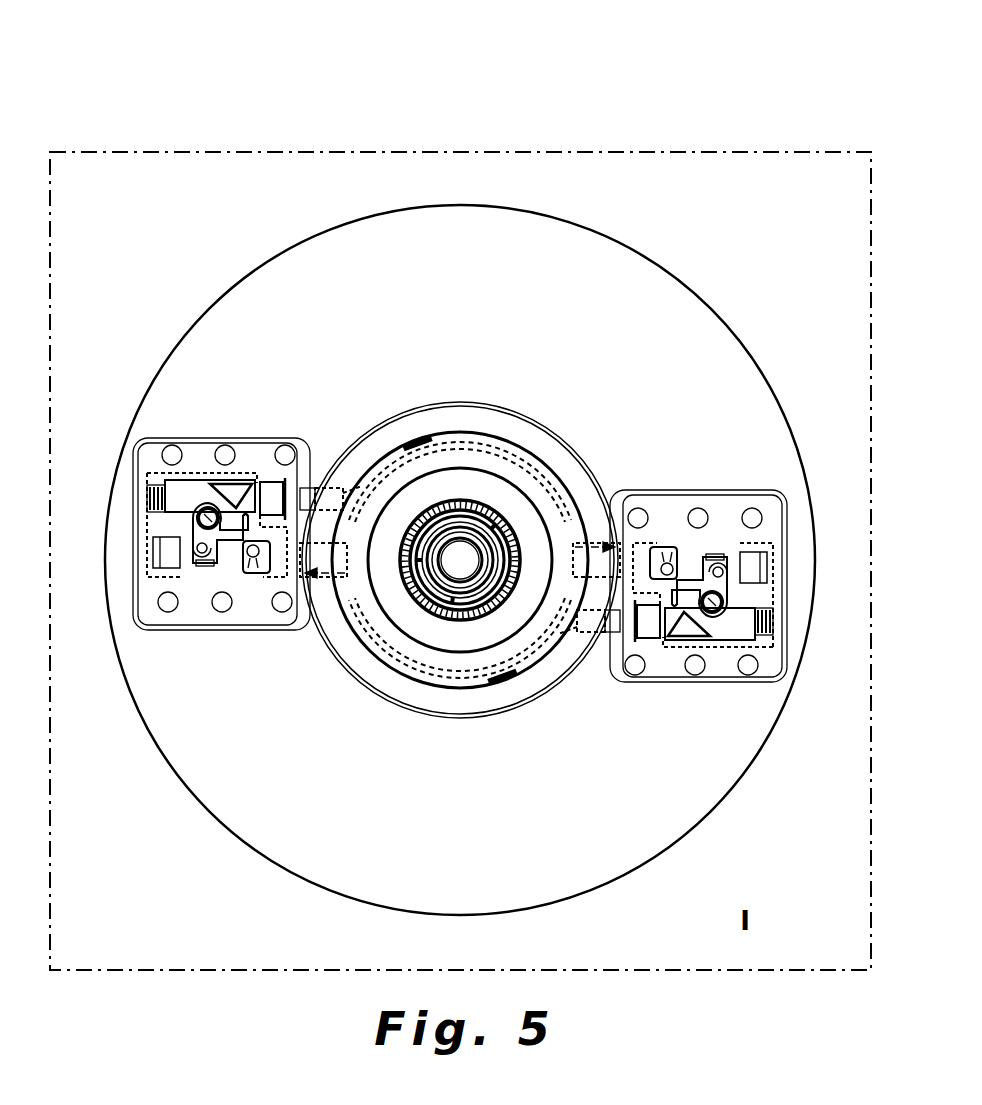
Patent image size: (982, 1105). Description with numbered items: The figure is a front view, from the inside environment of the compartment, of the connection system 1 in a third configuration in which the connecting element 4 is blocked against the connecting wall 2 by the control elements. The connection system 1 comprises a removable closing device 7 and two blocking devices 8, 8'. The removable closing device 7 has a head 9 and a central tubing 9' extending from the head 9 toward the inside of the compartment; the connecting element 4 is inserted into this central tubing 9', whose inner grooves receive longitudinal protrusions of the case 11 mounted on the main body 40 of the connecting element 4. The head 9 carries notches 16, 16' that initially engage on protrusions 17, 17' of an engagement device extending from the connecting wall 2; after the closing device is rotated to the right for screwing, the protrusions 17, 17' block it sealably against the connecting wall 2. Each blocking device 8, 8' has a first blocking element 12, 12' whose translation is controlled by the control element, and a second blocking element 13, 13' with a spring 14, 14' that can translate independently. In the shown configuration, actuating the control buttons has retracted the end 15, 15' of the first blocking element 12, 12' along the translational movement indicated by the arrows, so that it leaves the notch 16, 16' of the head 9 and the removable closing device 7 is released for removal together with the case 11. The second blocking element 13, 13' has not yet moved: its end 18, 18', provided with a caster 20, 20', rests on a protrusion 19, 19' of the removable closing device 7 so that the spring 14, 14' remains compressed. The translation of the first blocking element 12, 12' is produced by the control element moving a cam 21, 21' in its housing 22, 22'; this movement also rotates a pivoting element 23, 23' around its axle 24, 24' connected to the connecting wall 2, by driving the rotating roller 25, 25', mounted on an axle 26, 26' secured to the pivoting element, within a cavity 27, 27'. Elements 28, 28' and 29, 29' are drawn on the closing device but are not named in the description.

The connection system 1 is at (147, 132).
The connecting wall 2 is at (378, 262).
The connecting element 4 is at (513, 520).
The removable closing device 7 is at (600, 545).
The blocking device 8 is at (163, 534).
The blocking device 8' is at (761, 586).
The head 9 is at (439, 699).
The central tubing 9' is at (491, 469).
The case 11 is at (460, 515).
The first blocking element 12 is at (95, 560).
The first blocking element 12' is at (831, 562).
The second blocking element 13 is at (143, 478).
The second blocking element 13' is at (780, 642).
The spring 14 is at (82, 492).
The spring 14' is at (841, 630).
The end of first blocking element 15 is at (276, 623).
The end of first blocking element 15' is at (643, 499).
The notch 16 is at (428, 650).
The notch 16' is at (496, 469).
The protrusion 17 is at (402, 367).
The protrusion 17' is at (472, 730).
The end of second blocking element 18 is at (309, 434).
The end of second blocking element 18' is at (614, 686).
The protrusion 19 is at (374, 409).
The protrusion 19' is at (539, 713).
The caster 20 is at (312, 420).
The caster 20' is at (610, 699).
The cam 21 is at (240, 603).
The cam 21' is at (685, 517).
The housing 22 is at (197, 608).
The housing 22' is at (727, 514).
The pivoting element 23 is at (106, 544).
The pivoting element 23' is at (819, 583).
The axle 24 is at (161, 462).
The axle 24' is at (763, 658).
The rotating roller 25 is at (170, 593).
The rotating roller 25' is at (747, 529).
The axle 26 is at (109, 582).
The axle 26' is at (814, 538).
The cavity 27 is at (112, 604).
The cavity 27' is at (812, 515).
The cam groove 28 is at (460, 384).
The cam groove 28' is at (460, 718).
The guide groove 29 is at (460, 404).
The guide groove 29' is at (430, 697).
The main body 40 is at (483, 528).